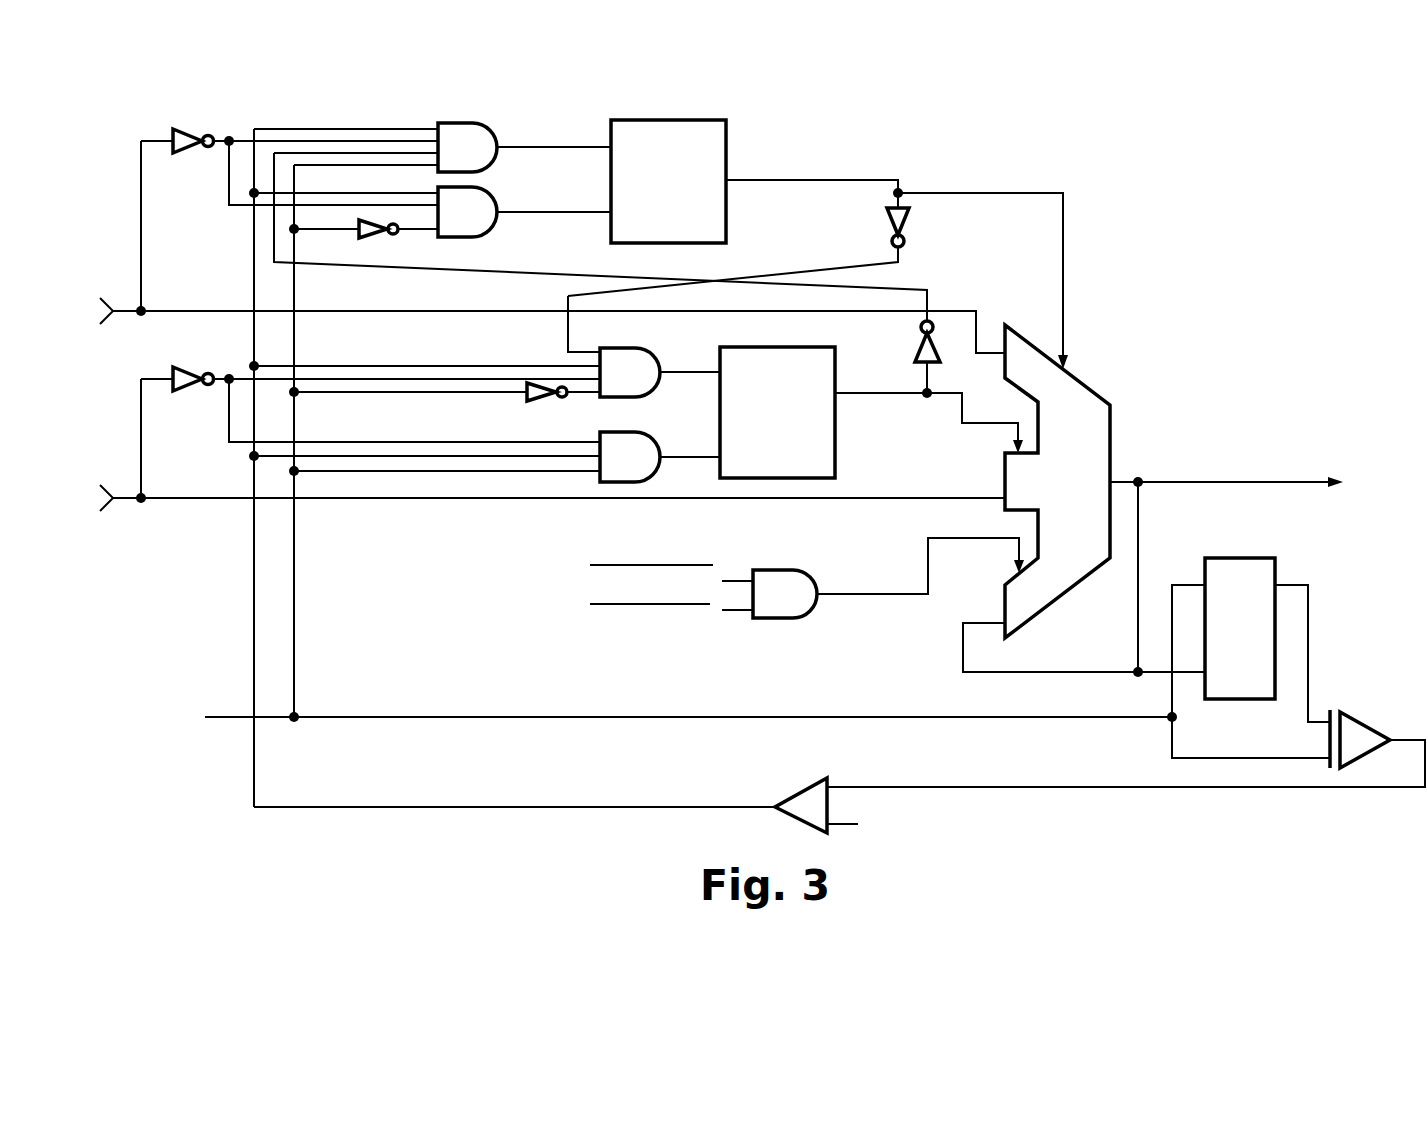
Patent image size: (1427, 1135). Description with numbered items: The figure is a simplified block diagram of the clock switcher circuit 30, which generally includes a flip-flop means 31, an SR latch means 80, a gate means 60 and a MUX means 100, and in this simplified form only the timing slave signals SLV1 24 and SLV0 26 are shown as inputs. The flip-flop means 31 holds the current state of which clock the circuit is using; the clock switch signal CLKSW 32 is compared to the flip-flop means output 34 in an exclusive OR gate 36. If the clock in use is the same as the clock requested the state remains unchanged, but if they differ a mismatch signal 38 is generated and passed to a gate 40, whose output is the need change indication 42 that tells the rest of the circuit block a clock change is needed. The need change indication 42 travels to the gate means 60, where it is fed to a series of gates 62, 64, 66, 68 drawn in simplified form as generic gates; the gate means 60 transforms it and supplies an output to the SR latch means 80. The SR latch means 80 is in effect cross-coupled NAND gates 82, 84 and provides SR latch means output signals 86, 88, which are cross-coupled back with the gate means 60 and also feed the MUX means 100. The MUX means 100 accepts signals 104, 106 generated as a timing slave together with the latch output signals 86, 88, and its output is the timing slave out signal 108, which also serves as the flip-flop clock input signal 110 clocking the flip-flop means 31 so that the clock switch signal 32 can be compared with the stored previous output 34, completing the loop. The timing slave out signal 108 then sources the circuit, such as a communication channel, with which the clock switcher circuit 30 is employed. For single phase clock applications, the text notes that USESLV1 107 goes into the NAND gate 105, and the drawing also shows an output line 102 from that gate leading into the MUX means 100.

The SLV1 timing slave signal 24 is at (130, 305).
The SLV0 timing slave signal 26 is at (130, 493).
The clock switcher circuit 30 is at (979, 169).
The flip-flop means 31 is at (1250, 558).
The CLKSW clock switch signal 32 is at (962, 719).
The flip-flop means output 34 is at (1310, 648).
The exclusive OR gate 36 is at (1360, 718).
The mismatch signal 38 is at (1135, 787).
The gate 40 is at (808, 783).
The need change indication 42 is at (537, 806).
The gate means 60 is at (367, 122).
The gate 62 is at (497, 131).
The gate 64 is at (494, 200).
The gate 66 is at (660, 352).
The gate 68 is at (676, 428).
The SR latch means 80 is at (682, 113).
The NAND gate 82 is at (727, 140).
The NAND gate 84 is at (835, 437).
The SR latch means output signal 86 is at (874, 180).
The SR latch means output signal 88 is at (868, 395).
The MUX means 100 is at (1090, 382).
The AND gate output line 102 is at (868, 596).
The signal 104 is at (987, 345).
The NAND gate 105 is at (813, 580).
The signal 106 is at (752, 498).
The USESLV1 signal 107 is at (740, 612).
The timing slave out signal 108 is at (1167, 478).
The flip-flop clock input signal 110 is at (1142, 548).